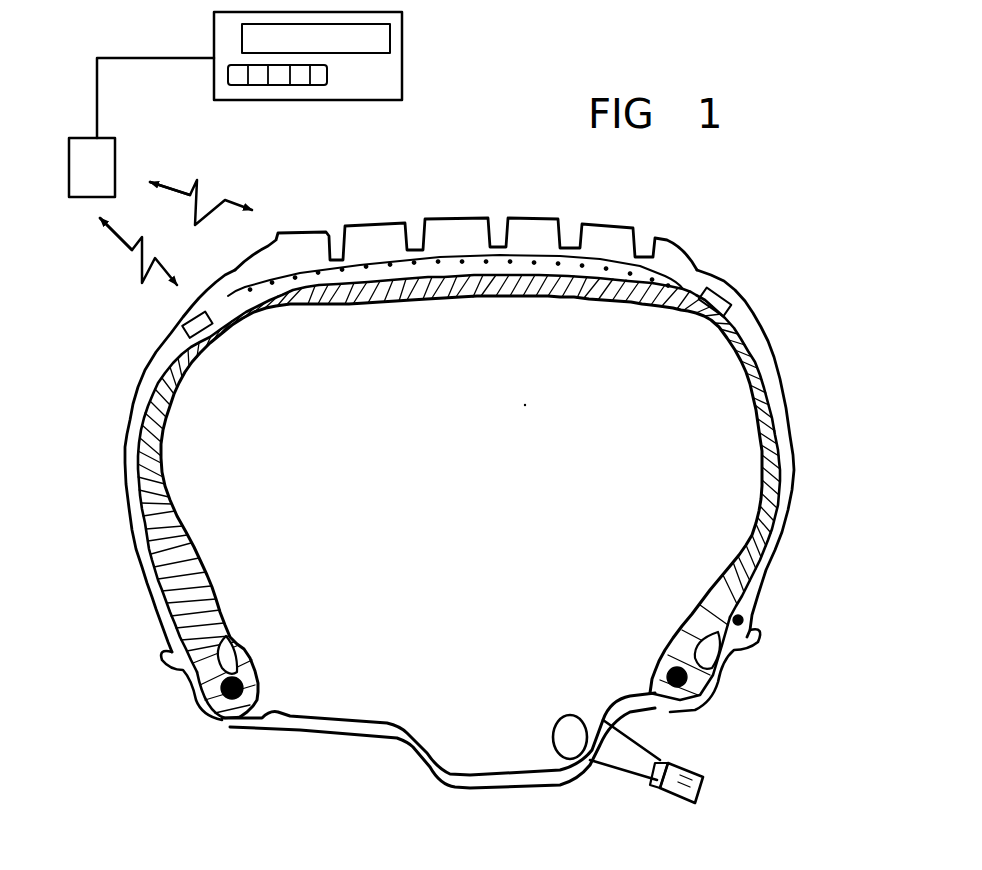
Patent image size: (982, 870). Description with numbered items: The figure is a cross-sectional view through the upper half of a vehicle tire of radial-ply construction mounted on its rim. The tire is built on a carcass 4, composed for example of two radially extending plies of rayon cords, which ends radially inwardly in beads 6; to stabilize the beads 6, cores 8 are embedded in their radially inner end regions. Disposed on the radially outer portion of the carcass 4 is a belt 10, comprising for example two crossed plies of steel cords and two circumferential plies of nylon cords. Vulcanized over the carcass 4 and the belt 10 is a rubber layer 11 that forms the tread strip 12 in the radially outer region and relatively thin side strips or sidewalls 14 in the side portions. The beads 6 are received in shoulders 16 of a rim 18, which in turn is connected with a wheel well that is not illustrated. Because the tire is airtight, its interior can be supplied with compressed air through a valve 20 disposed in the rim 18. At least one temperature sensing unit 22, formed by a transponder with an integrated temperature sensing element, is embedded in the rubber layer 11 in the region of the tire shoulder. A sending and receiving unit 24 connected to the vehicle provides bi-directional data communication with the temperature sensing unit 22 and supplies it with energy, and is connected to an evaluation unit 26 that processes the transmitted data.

The carcass 4 is at (735, 341).
The beads 6 is at (190, 683).
The cores 8 is at (233, 707).
The belt 10 is at (662, 270).
The rubber layer 11 is at (789, 372).
The tread strip 12 is at (450, 232).
The sidewalls 14 is at (133, 503).
The shoulders 16 is at (210, 722).
The rim 18 is at (390, 740).
The valve 20 is at (618, 758).
The temperature sensing unit 22 is at (188, 321).
The sending and receiving unit 24 is at (98, 172).
The evaluation unit 26 is at (378, 75).